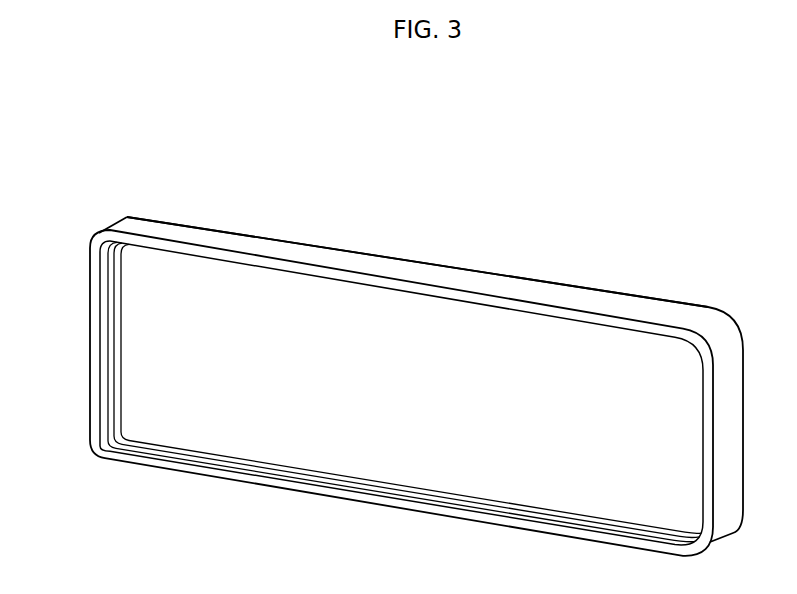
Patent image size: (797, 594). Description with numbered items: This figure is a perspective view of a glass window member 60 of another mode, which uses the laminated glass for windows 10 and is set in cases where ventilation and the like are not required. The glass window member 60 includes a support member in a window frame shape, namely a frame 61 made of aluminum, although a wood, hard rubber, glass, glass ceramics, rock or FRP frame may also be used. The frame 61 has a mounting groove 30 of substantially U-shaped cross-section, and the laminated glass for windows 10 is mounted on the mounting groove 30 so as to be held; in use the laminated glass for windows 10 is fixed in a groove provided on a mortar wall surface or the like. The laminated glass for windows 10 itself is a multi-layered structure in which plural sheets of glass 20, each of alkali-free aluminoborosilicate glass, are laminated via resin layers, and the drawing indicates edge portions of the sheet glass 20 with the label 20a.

The laminated glass for windows 10 is at (605, 387).
The sheet glass 20 is at (223, 297).
The end portion of plate member 20a is at (180, 287).
The mounting groove 30 is at (107, 322).
The glass window member 60 is at (337, 224).
The frame 61 is at (445, 273).